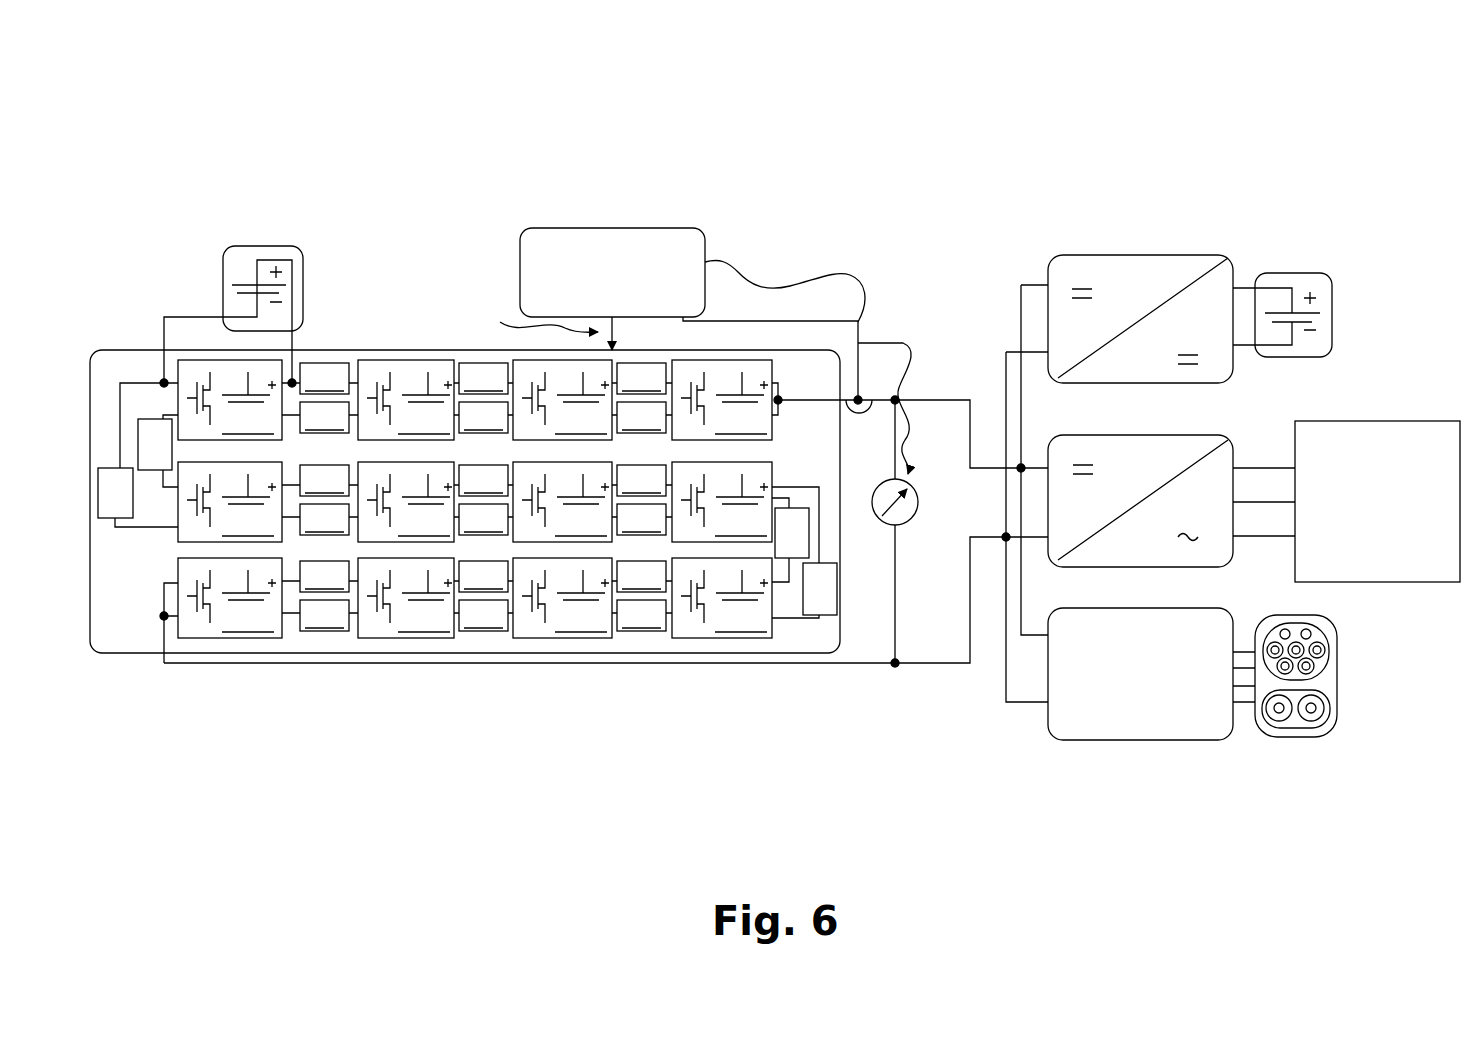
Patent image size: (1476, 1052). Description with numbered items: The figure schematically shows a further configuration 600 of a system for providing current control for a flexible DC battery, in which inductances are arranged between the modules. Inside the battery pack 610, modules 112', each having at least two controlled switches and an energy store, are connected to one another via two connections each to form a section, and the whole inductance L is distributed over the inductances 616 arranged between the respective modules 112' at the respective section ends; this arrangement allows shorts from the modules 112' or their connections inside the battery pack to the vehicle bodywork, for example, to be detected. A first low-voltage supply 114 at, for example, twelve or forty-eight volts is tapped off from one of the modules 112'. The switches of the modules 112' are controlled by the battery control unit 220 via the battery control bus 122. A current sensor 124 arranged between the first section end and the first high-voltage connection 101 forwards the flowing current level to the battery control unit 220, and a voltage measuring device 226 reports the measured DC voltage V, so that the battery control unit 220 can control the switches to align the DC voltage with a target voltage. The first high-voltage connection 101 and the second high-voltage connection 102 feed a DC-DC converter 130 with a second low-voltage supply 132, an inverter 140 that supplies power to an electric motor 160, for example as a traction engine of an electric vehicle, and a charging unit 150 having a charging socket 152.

The configuration 600 is at (213, 116).
The battery pack 610 is at (287, 655).
The module 112' is at (475, 499).
The inductance 616 is at (467, 497).
The first low-voltage supply 114 is at (271, 243).
The battery control bus 122 is at (525, 328).
The battery control unit 220 is at (585, 288).
The current sensor 124 is at (855, 392).
The voltage measuring device 226 is at (909, 476).
The first high-voltage connection 101 is at (1017, 461).
The second high-voltage connection 102 is at (1002, 547).
The DC-DC converter 130 is at (1136, 250).
The second low-voltage supply 132 is at (1342, 281).
The inverter 140 is at (1230, 431).
The electric motor 160 is at (1351, 516).
The charging unit 150 is at (1151, 674).
The charging socket 152 is at (1332, 739).